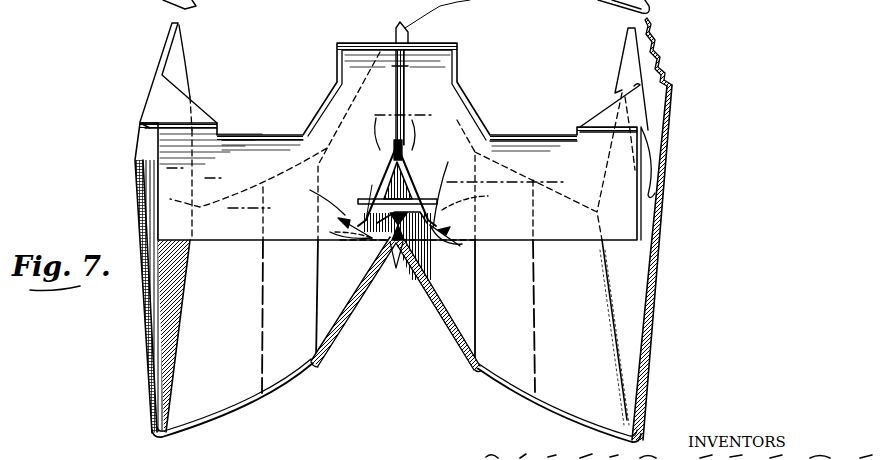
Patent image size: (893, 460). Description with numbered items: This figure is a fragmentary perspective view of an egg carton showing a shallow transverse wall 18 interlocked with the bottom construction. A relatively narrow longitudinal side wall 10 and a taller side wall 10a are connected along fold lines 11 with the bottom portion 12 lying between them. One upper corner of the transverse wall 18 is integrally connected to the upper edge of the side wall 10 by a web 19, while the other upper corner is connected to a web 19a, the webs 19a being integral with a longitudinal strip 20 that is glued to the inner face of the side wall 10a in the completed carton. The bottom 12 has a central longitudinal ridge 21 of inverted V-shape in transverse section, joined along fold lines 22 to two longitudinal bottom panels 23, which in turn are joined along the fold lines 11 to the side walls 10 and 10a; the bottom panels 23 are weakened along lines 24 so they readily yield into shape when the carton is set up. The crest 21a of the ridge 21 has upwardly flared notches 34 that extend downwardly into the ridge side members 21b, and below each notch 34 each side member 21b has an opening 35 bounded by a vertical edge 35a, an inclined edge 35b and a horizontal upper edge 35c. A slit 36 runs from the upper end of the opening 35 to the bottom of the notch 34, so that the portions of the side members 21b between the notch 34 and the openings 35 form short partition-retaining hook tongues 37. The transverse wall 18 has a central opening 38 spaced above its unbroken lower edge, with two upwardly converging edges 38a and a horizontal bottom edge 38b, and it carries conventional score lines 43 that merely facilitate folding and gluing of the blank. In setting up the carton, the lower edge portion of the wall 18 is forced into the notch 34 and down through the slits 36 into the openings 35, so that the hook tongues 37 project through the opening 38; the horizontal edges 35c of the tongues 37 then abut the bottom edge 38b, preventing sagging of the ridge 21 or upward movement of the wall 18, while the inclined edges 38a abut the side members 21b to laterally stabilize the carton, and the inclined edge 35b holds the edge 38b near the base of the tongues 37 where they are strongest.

The longitudinal side wall 10 is at (137, 192).
The taller side wall 10a is at (650, 308).
The fold lines 11 is at (150, 412).
The bottom portion 12 is at (289, 405).
The shallow transverse wall 18 is at (558, 163).
The web 19 is at (160, 96).
The web 19a is at (605, 103).
The longitudinal strip 20 is at (656, 198).
The central longitudinal ridge 21 is at (466, 310).
The crest 21a is at (405, 26).
The ridge side members 21b is at (343, 324).
The fold lines 22 is at (316, 366).
The longitudinal bottom panels 23 is at (535, 421).
The weakened lines 24 is at (258, 336).
The notches 34 is at (372, 186).
The opening 35 is at (340, 222).
The vertical edge 35a is at (335, 230).
The inclined edge 35b is at (355, 242).
The horizontal upper edge 35c is at (312, 191).
The slit 36 is at (395, 270).
The hook tongues 37 is at (380, 190).
The central opening 38 is at (394, 133).
The upwardly converging edges 38a is at (378, 120).
The horizontal bottom edge 38b is at (365, 203).
The score lines 43 is at (400, 66).